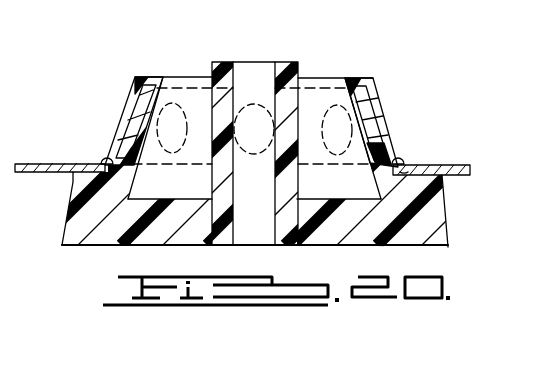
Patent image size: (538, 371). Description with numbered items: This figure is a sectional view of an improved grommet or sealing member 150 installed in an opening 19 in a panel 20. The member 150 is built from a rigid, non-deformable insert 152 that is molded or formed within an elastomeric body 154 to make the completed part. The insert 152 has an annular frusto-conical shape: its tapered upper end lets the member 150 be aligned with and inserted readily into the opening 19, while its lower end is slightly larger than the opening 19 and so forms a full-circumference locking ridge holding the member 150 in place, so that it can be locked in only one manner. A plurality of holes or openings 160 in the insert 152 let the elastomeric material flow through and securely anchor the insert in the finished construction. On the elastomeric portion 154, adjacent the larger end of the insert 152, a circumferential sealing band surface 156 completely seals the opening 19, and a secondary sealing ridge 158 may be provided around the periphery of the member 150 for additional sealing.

The grommet or sealing member 150 is at (98, 106).
The insert 152 is at (366, 93).
The elastomeric body 154 is at (432, 218).
The sealing band surface 156 is at (98, 160).
The secondary sealing ridge 158 is at (69, 180).
The holes or openings 160 is at (177, 82).
The opening 19 is at (396, 156).
The panel 20 is at (457, 165).